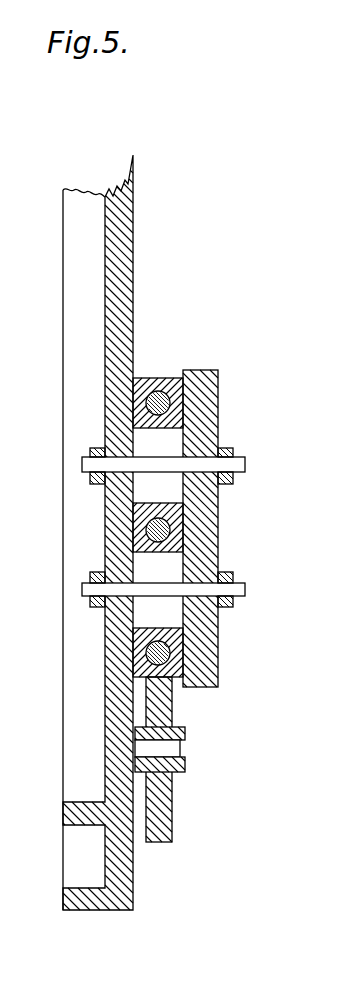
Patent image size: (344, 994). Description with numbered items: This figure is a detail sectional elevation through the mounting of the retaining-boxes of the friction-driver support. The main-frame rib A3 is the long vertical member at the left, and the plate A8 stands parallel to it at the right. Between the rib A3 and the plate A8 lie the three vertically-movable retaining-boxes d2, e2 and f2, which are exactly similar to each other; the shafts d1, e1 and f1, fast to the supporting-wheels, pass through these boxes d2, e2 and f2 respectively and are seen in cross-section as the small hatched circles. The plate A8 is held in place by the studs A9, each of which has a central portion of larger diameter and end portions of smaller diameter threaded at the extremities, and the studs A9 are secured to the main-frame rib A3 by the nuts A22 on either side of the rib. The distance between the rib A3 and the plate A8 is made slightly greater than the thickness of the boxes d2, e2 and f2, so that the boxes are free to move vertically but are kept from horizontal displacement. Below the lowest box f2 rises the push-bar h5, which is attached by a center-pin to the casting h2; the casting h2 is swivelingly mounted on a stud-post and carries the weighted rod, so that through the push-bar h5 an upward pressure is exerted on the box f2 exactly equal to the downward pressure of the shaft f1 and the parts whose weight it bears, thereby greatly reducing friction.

The main-frame rib A3 is at (112, 517).
The plate A8 is at (218, 396).
The stud A9 is at (60, 612).
The nut A22 is at (90, 572).
The shaft d1 is at (166, 410).
The vertically-movable retaining-box d2 is at (148, 380).
The shaft e1 is at (165, 530).
The vertically-movable retaining-box e2 is at (148, 508).
The shaft f1 is at (166, 653).
The vertically-movable retaining-box f2 is at (150, 642).
The push-bar h5 is at (172, 705).
The casting h2 is at (185, 765).